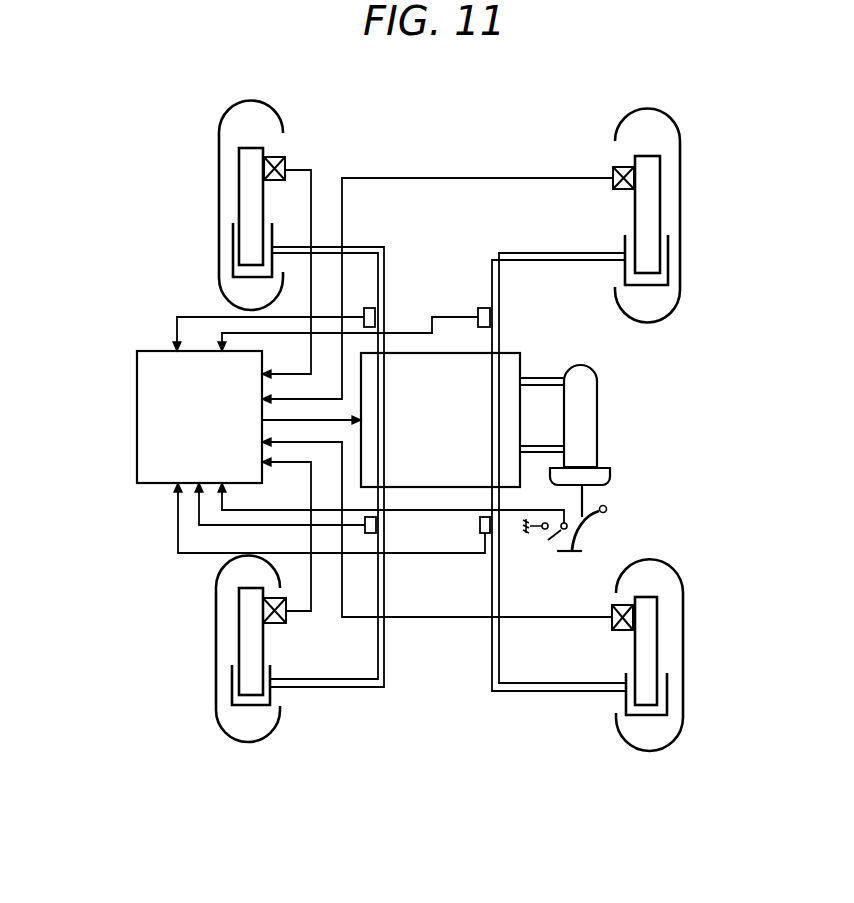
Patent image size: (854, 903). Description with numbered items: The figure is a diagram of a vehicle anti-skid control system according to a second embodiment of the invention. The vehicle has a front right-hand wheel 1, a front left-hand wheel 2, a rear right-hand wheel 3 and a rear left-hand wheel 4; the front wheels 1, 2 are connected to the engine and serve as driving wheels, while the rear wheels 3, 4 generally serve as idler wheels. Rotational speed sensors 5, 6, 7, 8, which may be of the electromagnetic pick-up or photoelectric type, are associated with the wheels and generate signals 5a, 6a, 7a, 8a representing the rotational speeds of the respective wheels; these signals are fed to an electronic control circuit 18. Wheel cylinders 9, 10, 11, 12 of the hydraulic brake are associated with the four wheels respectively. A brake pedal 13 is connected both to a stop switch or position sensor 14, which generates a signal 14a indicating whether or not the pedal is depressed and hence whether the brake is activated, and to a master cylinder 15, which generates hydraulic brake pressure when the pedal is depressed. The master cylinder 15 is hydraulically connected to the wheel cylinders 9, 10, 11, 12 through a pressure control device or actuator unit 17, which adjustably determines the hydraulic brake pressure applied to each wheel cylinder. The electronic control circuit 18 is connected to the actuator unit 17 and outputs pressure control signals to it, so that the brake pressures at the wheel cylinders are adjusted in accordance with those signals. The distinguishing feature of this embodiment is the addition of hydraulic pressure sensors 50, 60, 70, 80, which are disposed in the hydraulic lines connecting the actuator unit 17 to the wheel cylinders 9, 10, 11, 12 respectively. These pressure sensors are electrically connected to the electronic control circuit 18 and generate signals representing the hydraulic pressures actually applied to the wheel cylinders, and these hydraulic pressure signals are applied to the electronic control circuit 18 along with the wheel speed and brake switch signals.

The front right-hand wheel 1 is at (680, 165).
The front left-hand wheel 2 is at (219, 158).
The rear right-hand wheel 3 is at (683, 640).
The rear left-hand wheel 4 is at (216, 603).
The rotational speed sensor 5 is at (613, 167).
The rotational speed signal 5a is at (523, 178).
The rotational speed sensor 6 is at (273, 157).
The rotational speed signal 6a is at (311, 182).
The rotational speed sensor 7 is at (612, 605).
The rotational speed signal 7a is at (541, 617).
The rotational speed sensor 8 is at (278, 623).
The rotational speed signal 8a is at (311, 546).
The wheel cylinder 9 is at (668, 253).
The wheel cylinder 10 is at (233, 249).
The wheel cylinder 11 is at (667, 693).
The wheel cylinder 12 is at (232, 683).
The brake pedal 13 is at (590, 530).
The stop switch 14 is at (543, 540).
The brake signal 14a is at (421, 510).
The master cylinder 15 is at (597, 408).
The actuator unit 17 is at (520, 360).
The electronic control circuit 18 is at (137, 388).
The hydraulic pressure sensor 50 is at (482, 308).
The hydraulic pressure sensor 60 is at (367, 308).
The hydraulic pressure sensor 70 is at (480, 533).
The hydraulic pressure sensor 80 is at (370, 533).